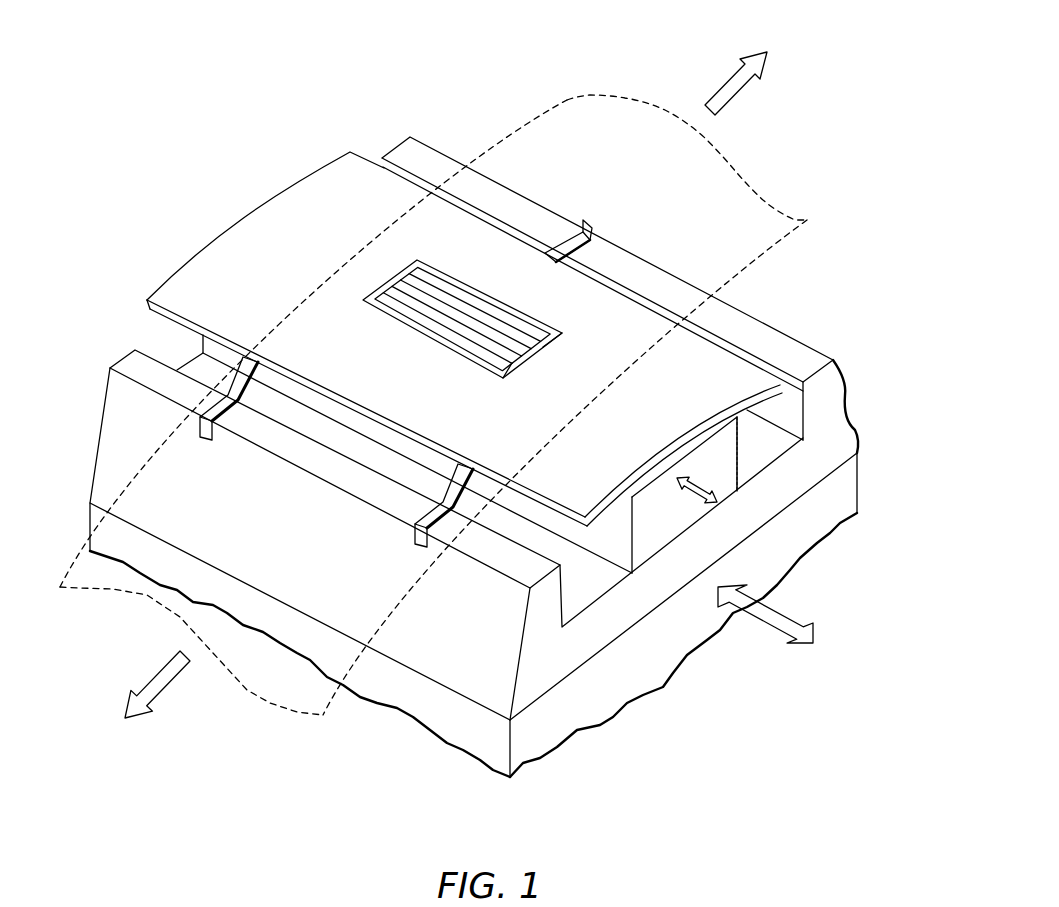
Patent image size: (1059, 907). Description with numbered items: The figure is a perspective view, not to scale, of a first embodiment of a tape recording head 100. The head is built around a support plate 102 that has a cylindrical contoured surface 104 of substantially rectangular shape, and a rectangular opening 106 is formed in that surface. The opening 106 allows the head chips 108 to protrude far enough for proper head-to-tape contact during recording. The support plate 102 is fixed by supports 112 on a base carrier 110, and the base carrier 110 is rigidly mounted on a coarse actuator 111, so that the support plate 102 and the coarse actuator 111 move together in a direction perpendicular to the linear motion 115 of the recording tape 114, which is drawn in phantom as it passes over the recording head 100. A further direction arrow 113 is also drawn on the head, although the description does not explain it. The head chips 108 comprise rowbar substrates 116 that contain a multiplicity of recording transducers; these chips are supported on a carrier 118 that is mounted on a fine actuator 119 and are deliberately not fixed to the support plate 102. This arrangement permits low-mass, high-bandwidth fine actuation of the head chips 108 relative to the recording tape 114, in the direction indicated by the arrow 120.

The tape recording head 100 is at (713, 780).
The support plate 102 is at (305, 172).
The cylindrical contoured surface 104 is at (245, 232).
The rectangular opening 106 is at (528, 314).
The head chips 108 is at (443, 292).
The base carrier 110 is at (793, 350).
The coarse actuator 111 is at (623, 680).
The supports 112 is at (248, 365).
The lateral direction arrow 113 is at (790, 622).
The recording tape 114 is at (543, 136).
The linear motion 115 is at (733, 92).
The rowbar substrates 116 is at (512, 363).
The carrier 118 is at (730, 450).
The fine actuator 119 is at (645, 541).
The arrow 120 is at (718, 495).